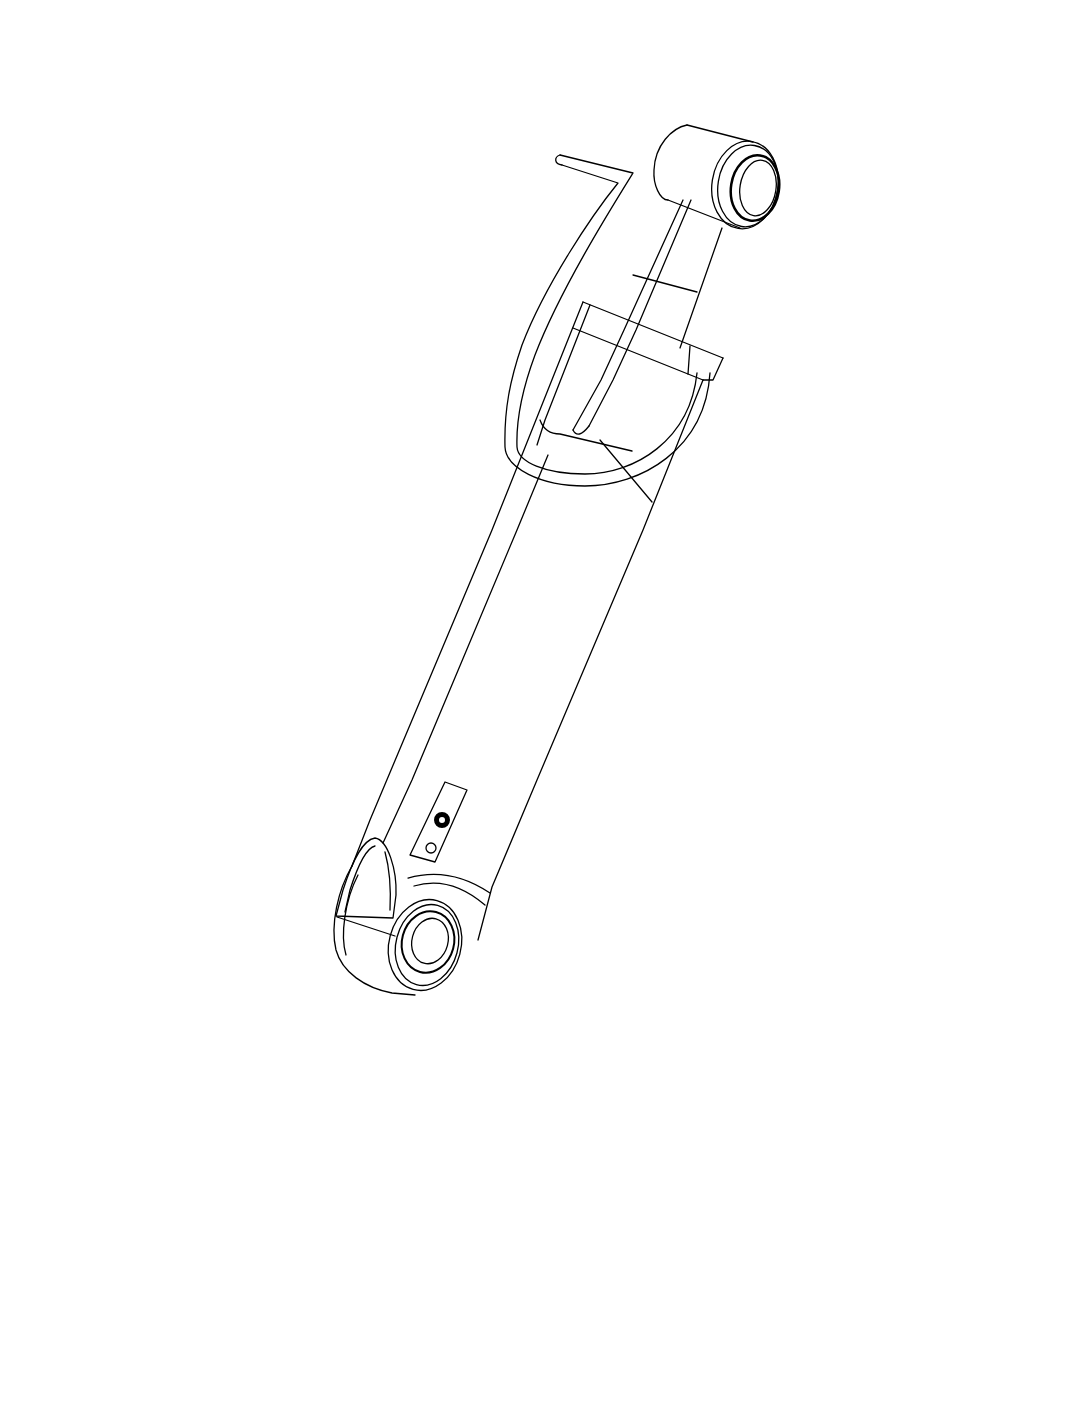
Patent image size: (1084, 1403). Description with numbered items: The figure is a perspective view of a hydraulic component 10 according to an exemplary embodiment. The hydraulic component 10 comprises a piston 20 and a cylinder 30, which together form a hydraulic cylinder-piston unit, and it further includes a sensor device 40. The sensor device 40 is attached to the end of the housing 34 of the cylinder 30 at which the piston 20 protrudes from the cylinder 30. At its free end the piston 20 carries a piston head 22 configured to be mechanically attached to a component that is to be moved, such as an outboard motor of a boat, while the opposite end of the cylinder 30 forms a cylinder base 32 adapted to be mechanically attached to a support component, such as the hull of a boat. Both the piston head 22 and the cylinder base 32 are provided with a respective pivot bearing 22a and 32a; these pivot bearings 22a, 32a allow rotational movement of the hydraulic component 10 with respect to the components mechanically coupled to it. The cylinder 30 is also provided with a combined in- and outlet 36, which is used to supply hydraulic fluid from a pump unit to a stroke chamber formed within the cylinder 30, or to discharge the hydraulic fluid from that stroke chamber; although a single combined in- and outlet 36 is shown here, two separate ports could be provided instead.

The hydraulic component 10 is at (368, 263).
The piston 20 is at (757, 287).
The piston head 22 is at (705, 140).
The pivot bearing 22a is at (762, 183).
The cylinder 30 is at (617, 723).
The cylinder base 32 is at (365, 907).
The pivot bearing 32a is at (435, 940).
The housing 34 is at (618, 542).
The combined in- and outlet 36 is at (442, 808).
The sensor device 40 is at (735, 382).